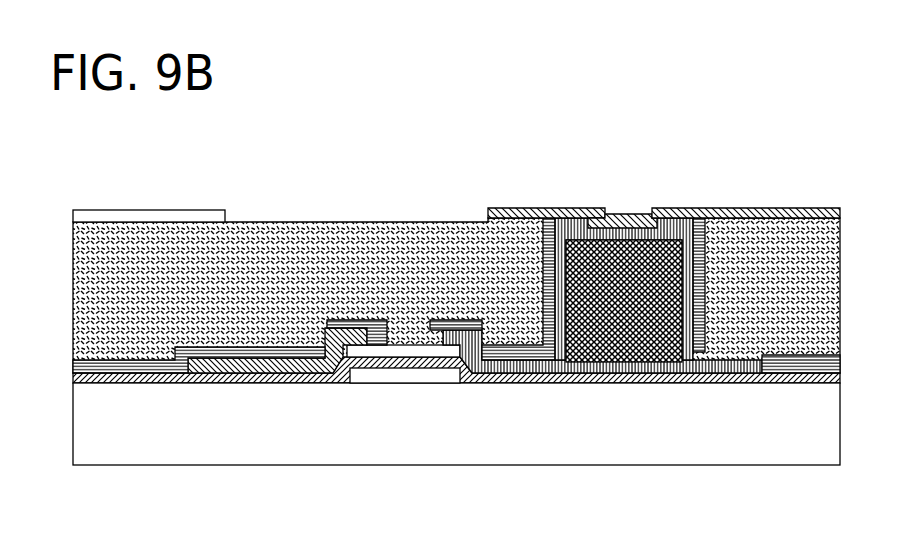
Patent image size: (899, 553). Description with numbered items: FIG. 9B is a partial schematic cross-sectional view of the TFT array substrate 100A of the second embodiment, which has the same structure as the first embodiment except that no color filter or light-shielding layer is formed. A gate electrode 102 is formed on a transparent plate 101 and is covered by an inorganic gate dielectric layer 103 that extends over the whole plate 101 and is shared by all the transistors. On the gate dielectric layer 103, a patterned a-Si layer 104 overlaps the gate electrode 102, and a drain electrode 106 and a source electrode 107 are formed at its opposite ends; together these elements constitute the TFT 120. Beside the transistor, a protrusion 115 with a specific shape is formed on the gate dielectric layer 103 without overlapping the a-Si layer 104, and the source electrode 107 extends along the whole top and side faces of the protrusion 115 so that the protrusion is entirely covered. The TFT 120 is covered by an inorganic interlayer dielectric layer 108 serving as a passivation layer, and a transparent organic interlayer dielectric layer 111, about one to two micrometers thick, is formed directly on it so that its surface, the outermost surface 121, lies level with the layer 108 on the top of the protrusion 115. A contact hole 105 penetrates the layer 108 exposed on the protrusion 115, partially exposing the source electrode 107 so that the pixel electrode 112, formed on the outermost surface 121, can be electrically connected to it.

The TFT array substrate 100A is at (456, 280).
The transparent plate 101 is at (722, 440).
The gate electrode 102 is at (373, 378).
The gate dielectric layer 103 is at (223, 381).
The a-Si layer 104 is at (437, 347).
The contact hole 105 is at (653, 214).
The drain electrode 106 is at (270, 356).
The source electrode 107 is at (610, 216).
The inorganic interlayer dielectric layer 108 is at (514, 341).
The transparent organic interlayer dielectric layer 111 is at (161, 212).
The pixel electrode 112 is at (487, 212).
The protrusion 115 is at (617, 345).
The TFT 120 is at (421, 394).
The outermost surface 121 is at (360, 222).